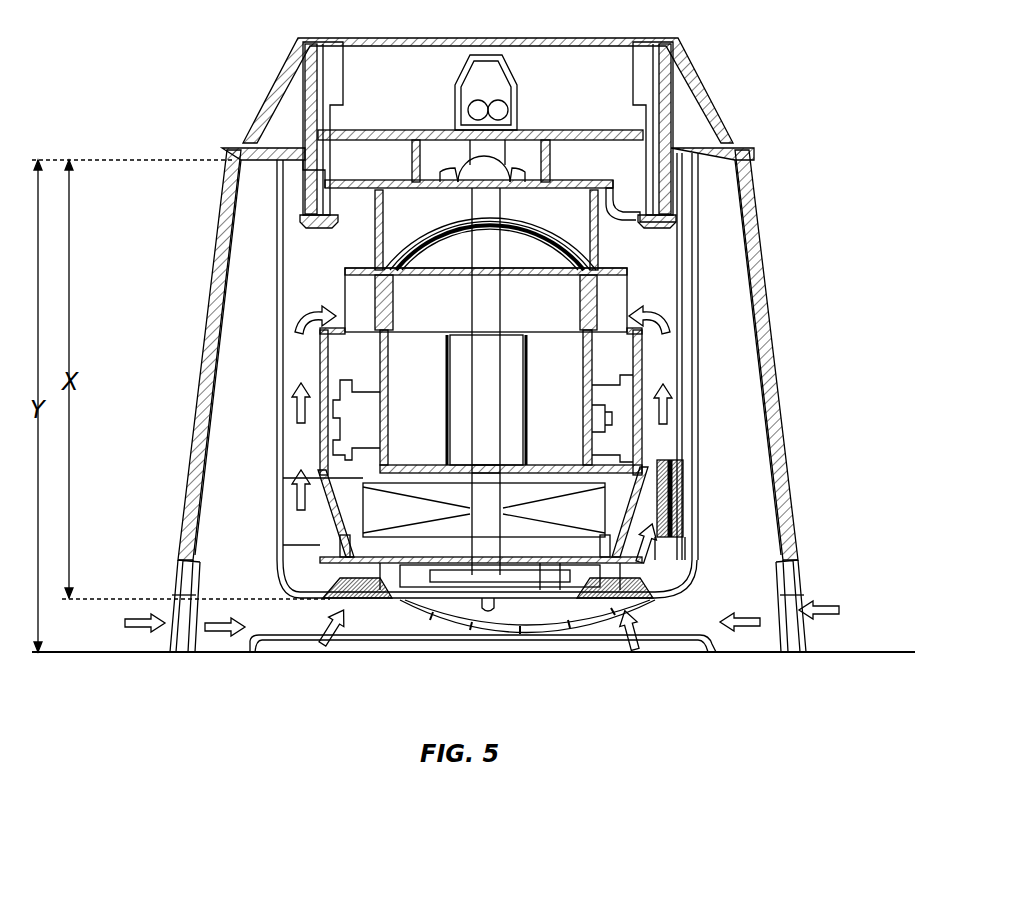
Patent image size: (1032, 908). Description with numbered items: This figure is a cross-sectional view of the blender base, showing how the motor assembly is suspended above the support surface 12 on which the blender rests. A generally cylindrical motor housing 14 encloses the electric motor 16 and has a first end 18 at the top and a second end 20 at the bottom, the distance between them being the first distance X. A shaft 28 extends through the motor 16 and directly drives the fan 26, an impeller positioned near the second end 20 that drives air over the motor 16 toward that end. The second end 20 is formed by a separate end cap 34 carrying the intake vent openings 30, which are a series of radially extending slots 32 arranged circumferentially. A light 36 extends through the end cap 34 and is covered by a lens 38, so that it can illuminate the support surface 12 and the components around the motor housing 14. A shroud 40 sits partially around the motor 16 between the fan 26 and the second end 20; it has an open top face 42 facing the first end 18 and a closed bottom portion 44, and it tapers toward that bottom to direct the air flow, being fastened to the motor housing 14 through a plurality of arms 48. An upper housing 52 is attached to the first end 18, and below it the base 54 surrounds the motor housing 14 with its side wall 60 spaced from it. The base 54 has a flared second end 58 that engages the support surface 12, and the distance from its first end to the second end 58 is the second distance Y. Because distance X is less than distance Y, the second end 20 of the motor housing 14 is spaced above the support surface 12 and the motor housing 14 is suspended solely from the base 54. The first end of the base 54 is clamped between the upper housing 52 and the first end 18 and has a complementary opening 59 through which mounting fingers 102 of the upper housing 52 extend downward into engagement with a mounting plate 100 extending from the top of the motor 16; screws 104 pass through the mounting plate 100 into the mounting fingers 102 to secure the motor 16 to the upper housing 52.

The support surface 12 is at (850, 652).
The motor housing 14 is at (692, 237).
The electric motor 16 is at (578, 418).
The first end 18 is at (692, 207).
The second end 20 is at (690, 522).
The fan 26 is at (373, 495).
The shaft 28 is at (475, 312).
The intake vent openings 30 is at (327, 600).
The radially extending slots 32 is at (363, 600).
The end cap 34 is at (290, 593).
The light 36 is at (488, 598).
The lens 38 is at (540, 607).
The shroud 40 is at (320, 360).
The open top face 42 is at (602, 363).
The closed bottom portion 44 is at (517, 557).
The arms 48 is at (652, 548).
The upper housing 52 is at (300, 130).
The base 54 is at (213, 360).
The second end 58 is at (233, 643).
The complementary opening 59 is at (302, 147).
The side wall 60 is at (210, 293).
The mounting plate 100 is at (628, 273).
The mounting fingers 102 is at (330, 167).
The screws 104 is at (318, 225).